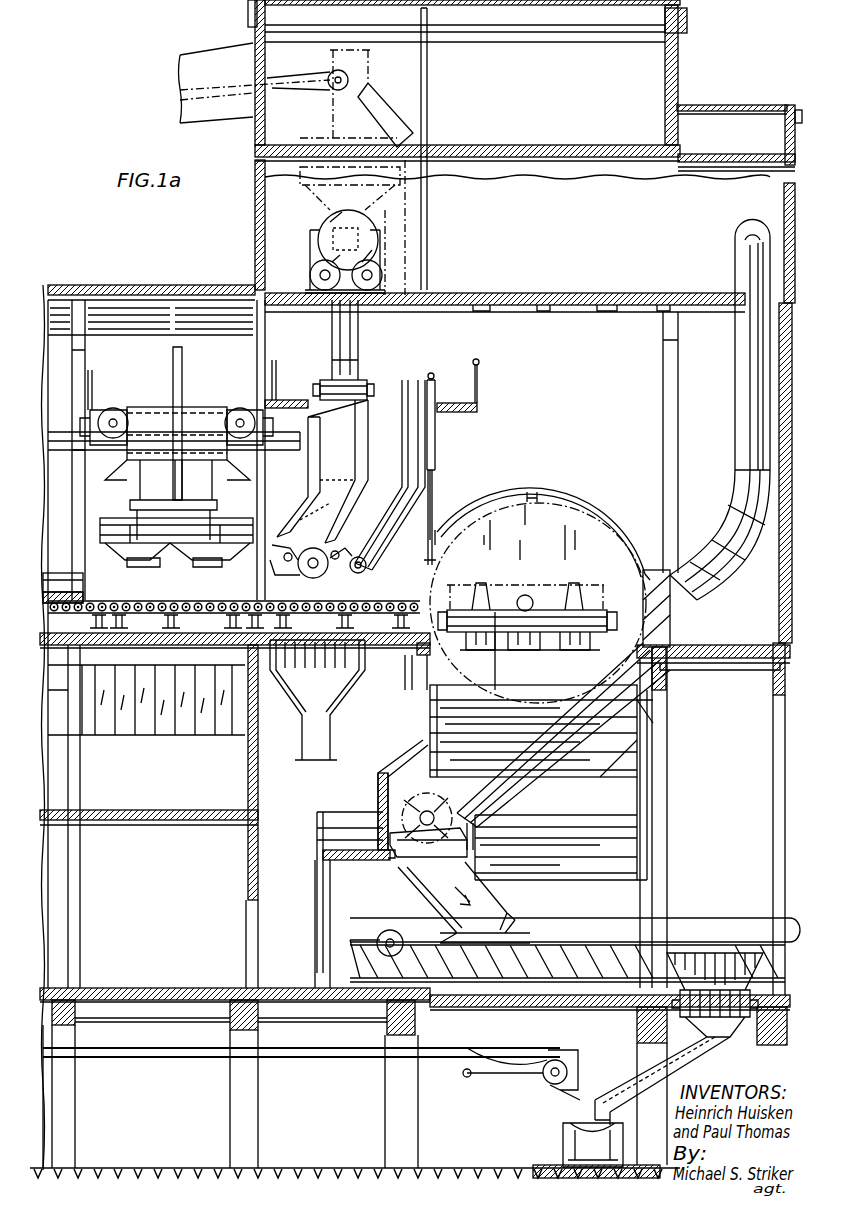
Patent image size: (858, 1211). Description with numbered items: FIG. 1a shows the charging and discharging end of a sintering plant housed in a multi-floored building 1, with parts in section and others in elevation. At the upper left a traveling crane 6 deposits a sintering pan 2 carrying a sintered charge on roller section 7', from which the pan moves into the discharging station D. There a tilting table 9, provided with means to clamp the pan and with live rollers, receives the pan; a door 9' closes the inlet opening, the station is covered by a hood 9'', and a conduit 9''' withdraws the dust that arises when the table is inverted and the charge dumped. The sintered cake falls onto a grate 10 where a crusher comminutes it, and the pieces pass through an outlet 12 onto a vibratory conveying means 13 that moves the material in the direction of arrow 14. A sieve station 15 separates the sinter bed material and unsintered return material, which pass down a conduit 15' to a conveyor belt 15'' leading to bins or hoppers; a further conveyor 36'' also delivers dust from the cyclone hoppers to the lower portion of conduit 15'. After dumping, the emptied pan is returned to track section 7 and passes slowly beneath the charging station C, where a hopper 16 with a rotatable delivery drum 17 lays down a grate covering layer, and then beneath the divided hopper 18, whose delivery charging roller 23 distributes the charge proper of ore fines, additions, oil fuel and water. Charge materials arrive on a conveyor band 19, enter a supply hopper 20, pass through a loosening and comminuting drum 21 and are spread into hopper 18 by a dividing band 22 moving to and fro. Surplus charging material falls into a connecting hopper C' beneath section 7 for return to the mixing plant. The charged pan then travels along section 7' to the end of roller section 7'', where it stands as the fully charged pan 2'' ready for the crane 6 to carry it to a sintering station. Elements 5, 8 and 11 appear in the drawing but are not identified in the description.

The multi-floored building 1 is at (212, 297).
The sintering pan 2 is at (176, 518).
The fully charged pan 2'' is at (63, 574).
The chain conveyor with funnels 5 is at (195, 558).
The traveling crane 6 is at (150, 415).
The track section 7 is at (373, 607).
The roller section 7' is at (242, 603).
The roller section 7'' is at (100, 600).
The conveyor stand 8 is at (127, 614).
The tilting table 9 is at (538, 591).
The door 9' is at (439, 517).
The hood 9'' is at (542, 525).
The conduit 9''' is at (720, 410).
The grate 10 is at (410, 850).
The rotary feeder 11 is at (420, 805).
The outlet 12 is at (495, 902).
The conveying means 13 is at (358, 941).
The arrow 14 is at (758, 922).
The sieve station 15 is at (715, 965).
The conduit 15' is at (662, 1081).
The conveyor belt 15'' is at (561, 1113).
The hopper 16 is at (440, 438).
The delivery drum 17 is at (373, 568).
The hopper 18 is at (312, 478).
The conveyor band 19 is at (230, 87).
The supply hopper 20 is at (308, 195).
The loosening and comminuting drum 21 is at (368, 232).
The dividing band 22 is at (326, 382).
The delivery charging roller 23 is at (306, 578).
The conveyor 36'' is at (301, 1043).
The charging station C is at (450, 364).
The connecting hopper C' is at (317, 700).
The discharging station D is at (606, 510).